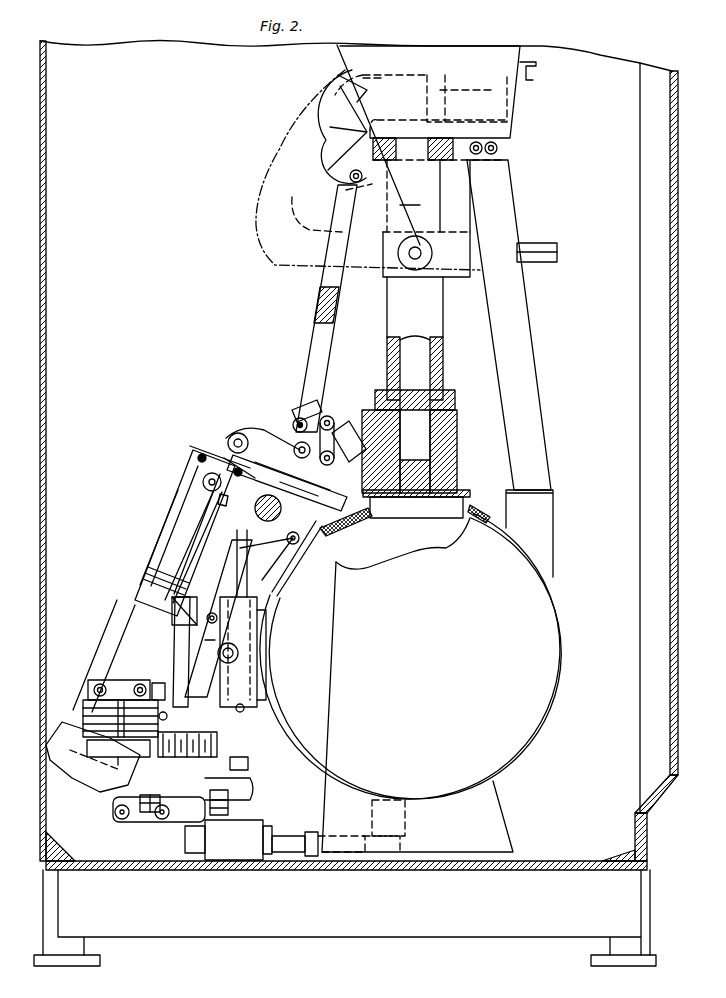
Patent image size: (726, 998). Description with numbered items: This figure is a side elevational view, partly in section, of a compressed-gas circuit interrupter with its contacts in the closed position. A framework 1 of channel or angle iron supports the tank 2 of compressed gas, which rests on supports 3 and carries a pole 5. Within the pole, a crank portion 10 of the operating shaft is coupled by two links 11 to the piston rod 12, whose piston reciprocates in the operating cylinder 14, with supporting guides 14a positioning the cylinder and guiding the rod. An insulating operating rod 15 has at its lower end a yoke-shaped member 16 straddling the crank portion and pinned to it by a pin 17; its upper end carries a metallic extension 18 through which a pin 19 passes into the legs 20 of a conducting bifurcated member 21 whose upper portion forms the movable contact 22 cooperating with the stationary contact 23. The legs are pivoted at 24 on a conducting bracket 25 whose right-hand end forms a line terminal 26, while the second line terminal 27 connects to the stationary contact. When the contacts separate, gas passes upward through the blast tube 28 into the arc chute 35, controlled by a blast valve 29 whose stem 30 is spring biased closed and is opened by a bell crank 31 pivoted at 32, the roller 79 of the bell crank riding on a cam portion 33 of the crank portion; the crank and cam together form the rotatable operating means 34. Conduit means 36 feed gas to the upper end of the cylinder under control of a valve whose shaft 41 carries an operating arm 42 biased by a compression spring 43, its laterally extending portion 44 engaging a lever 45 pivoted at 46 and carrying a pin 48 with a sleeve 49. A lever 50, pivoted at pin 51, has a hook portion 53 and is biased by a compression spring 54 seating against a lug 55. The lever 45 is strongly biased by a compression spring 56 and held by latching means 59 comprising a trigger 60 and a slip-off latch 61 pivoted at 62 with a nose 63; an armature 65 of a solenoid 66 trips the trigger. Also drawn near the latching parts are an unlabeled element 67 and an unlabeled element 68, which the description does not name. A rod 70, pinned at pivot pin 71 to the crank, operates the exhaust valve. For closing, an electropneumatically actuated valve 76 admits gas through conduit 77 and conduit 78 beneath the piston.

The framework 1 is at (112, 838).
The tank 2 is at (283, 582).
The supports 3 is at (512, 806).
The pole 5 is at (268, 126).
The crank portion 10 is at (256, 432).
The links 11 is at (228, 442).
The piston rod 12 is at (175, 522).
The operating cylinder 14 is at (114, 610).
The supporting guides 14a is at (165, 540).
The insulating operating rod 15 is at (339, 332).
The yoke-shaped member 16 is at (313, 410).
The pin 17 is at (292, 414).
The metallic extension 18 is at (340, 206).
The pin 19 is at (349, 178).
The legs 20 is at (400, 205).
The bifurcated member 21 is at (343, 110).
The movable contact 22 is at (383, 76).
The stationary contact 23 is at (478, 80).
The pivotal support 24 is at (418, 234).
The bracket 25 is at (451, 233).
The line terminal 26 is at (537, 265).
The second line terminal 27 is at (534, 68).
The blast tube 28 is at (446, 322).
The blast valve 29 is at (416, 504).
The stem 30 is at (398, 456).
The bell crank 31 is at (332, 428).
The pivot 32 is at (287, 483).
The cam portion 33 is at (381, 550).
The rotatable operating means 34 is at (292, 475).
The arc chute 35 is at (458, 39).
The conduit means 36 is at (250, 588).
The shaft 41 is at (219, 618).
The operating arm 42 is at (190, 657).
The compression spring 43 is at (172, 615).
The laterally extending portion 44 is at (242, 712).
The lever 45 is at (236, 745).
The pivot 46 is at (236, 655).
The pin 48 is at (213, 506).
The sleeve 49 is at (218, 618).
The lever 50 is at (296, 566).
The pin 51 is at (300, 542).
The hook portion 53 is at (193, 547).
The compression spring 54 is at (268, 516).
The lug 55 is at (297, 491).
The compression spring 56 is at (187, 735).
The latching means 59 is at (150, 837).
The trigger 60 is at (181, 825).
The latch 61 is at (250, 790).
The pivotal mounting 62 is at (225, 802).
The nose 63 is at (246, 766).
The armature 65 is at (100, 782).
The solenoid 66 is at (120, 732).
The pin 67 is at (219, 682).
The pin 68 is at (163, 698).
The rod 70 is at (219, 509).
The pivot pin 71 is at (258, 464).
The electropneumatically actuated valve 76 is at (240, 850).
The conduit 77 is at (292, 836).
The conduit 78 is at (150, 803).
The roller 79 is at (292, 440).